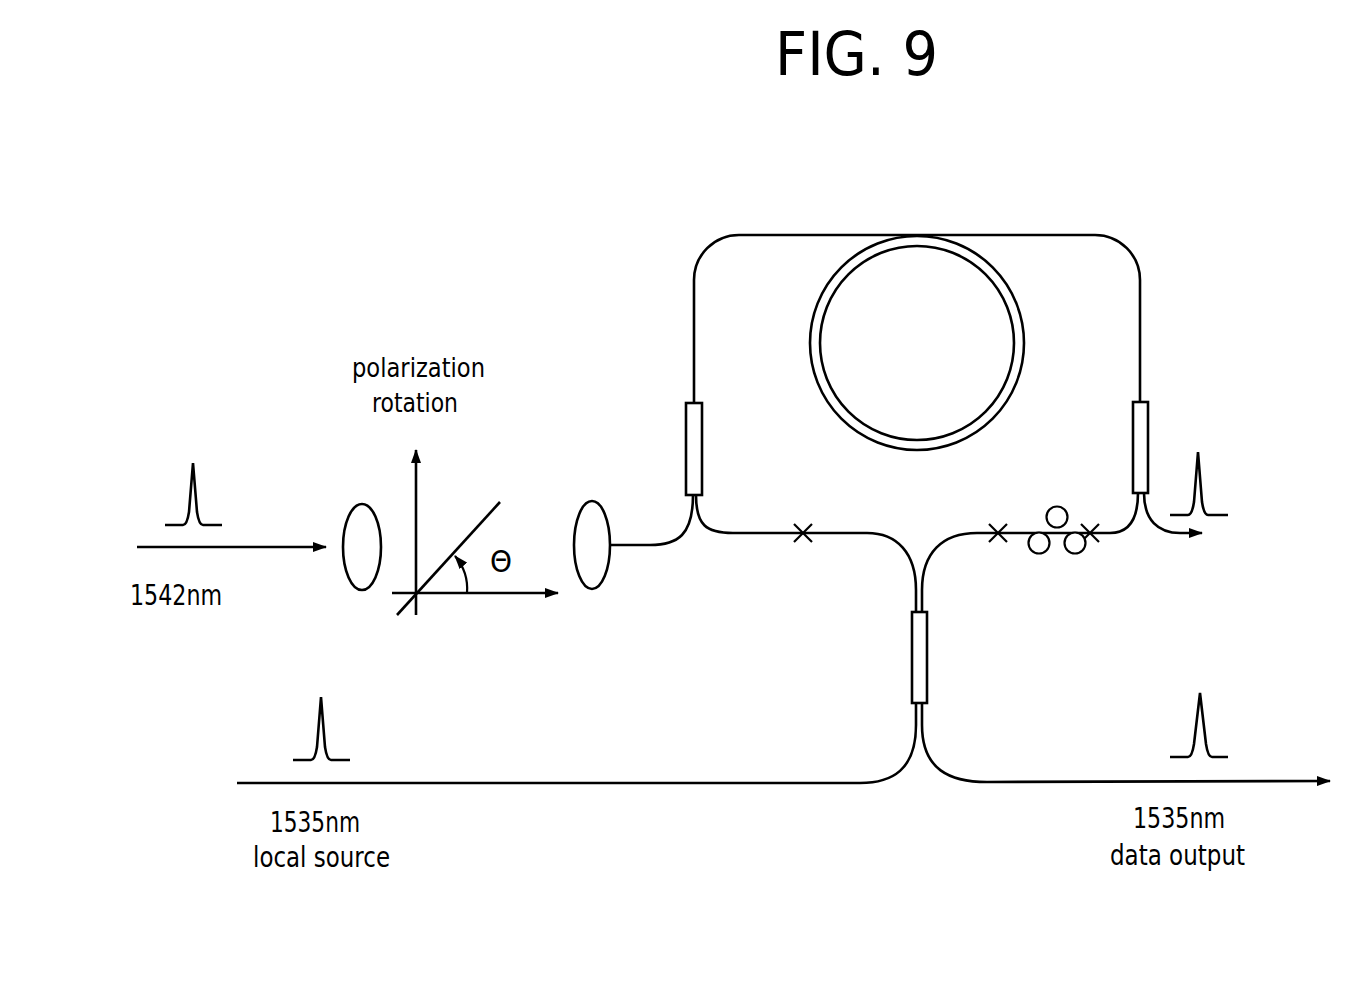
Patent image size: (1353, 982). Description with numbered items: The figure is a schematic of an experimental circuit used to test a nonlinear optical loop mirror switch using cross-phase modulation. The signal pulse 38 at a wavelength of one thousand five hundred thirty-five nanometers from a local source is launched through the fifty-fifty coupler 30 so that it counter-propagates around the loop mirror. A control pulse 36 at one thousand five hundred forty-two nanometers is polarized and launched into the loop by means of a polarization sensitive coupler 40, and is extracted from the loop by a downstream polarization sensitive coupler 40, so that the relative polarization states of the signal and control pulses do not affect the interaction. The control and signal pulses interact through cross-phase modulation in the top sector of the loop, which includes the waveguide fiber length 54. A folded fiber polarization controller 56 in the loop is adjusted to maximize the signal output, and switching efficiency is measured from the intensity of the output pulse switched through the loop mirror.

The 50/50 coupler 30 is at (910, 644).
The control pulse 36 is at (199, 490).
The signal pulse 38 is at (330, 737).
The polarization sensitive coupler 40 is at (703, 425).
The waveguide fiber length 54 is at (915, 235).
The folded fiber polarization controller 56 is at (1057, 551).